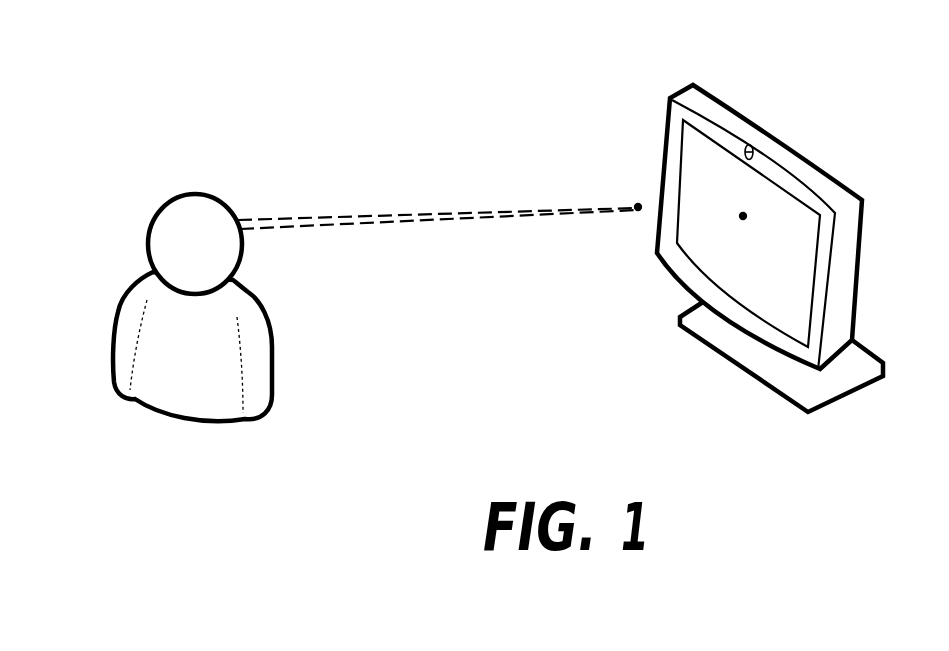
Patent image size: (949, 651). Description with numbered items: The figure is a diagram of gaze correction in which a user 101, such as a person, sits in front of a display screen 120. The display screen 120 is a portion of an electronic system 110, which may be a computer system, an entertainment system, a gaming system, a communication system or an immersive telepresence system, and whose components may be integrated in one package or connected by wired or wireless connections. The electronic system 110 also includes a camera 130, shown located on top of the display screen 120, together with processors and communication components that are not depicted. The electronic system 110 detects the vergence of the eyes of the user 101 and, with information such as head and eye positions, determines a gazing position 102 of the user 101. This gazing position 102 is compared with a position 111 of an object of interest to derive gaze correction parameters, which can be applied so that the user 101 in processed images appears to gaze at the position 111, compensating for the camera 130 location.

The user 101 is at (192, 307).
The gazing position 102 is at (636, 209).
The electronic system 110 is at (808, 83).
The position of an object of interest 111 is at (743, 216).
The display screen 120 is at (800, 281).
The camera 130 is at (753, 152).